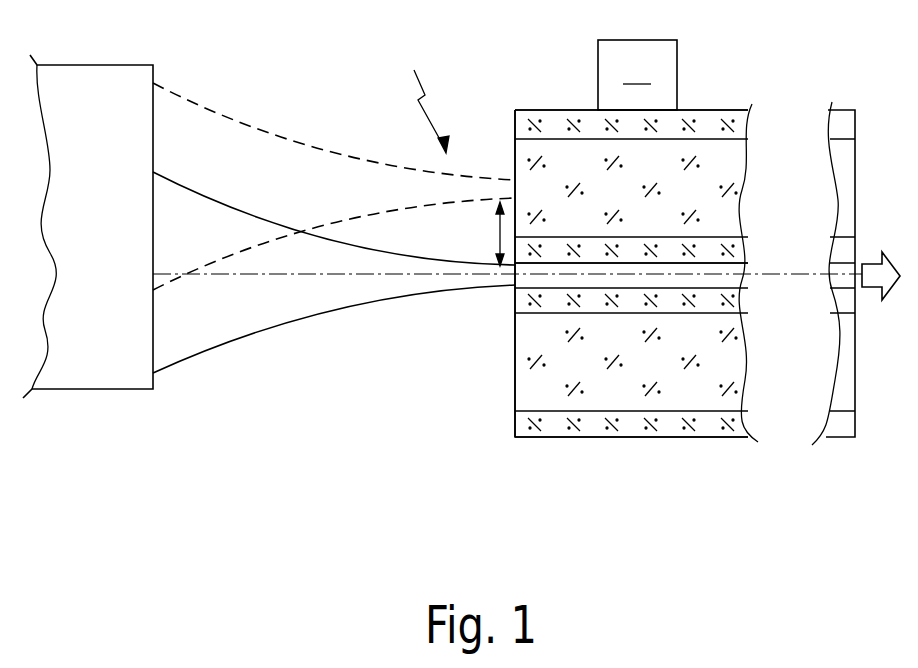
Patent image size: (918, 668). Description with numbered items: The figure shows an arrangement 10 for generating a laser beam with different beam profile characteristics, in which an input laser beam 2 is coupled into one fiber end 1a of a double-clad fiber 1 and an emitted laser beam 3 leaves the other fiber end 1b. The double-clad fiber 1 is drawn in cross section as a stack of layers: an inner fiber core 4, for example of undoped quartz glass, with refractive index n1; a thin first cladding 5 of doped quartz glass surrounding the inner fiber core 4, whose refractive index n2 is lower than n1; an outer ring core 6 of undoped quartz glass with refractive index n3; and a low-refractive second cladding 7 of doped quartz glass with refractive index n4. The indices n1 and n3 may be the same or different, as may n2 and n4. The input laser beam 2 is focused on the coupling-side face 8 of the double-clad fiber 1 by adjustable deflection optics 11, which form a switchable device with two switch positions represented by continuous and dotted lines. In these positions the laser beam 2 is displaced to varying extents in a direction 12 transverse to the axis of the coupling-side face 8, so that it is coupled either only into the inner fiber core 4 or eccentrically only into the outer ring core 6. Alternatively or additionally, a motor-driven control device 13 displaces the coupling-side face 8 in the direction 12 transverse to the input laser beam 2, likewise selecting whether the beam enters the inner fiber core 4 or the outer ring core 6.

The double-clad fiber 1 is at (707, 100).
The fiber end 1a is at (572, 110).
The other fiber end 1b is at (840, 110).
The input laser beam 2 is at (178, 180).
The emitted laser beam 3 is at (873, 288).
The inner fiber core 4 is at (552, 283).
The first cladding 5 is at (600, 300).
The outer ring core 6 is at (650, 372).
The second cladding 7 is at (692, 420).
The coupling-side face 8 is at (515, 148).
The arrangement 10 is at (424, 96).
The adjustable deflection optics 11 is at (118, 375).
The direction 12 is at (488, 235).
The motor-driven control device 13 is at (637, 75).
The refractive index of inner fiber core n1 is at (663, 381).
The refractive index of first cladding n2 is at (745, 240).
The refractive index of outer ring core n3 is at (742, 170).
The refractive index of second cladding n4 is at (745, 128).